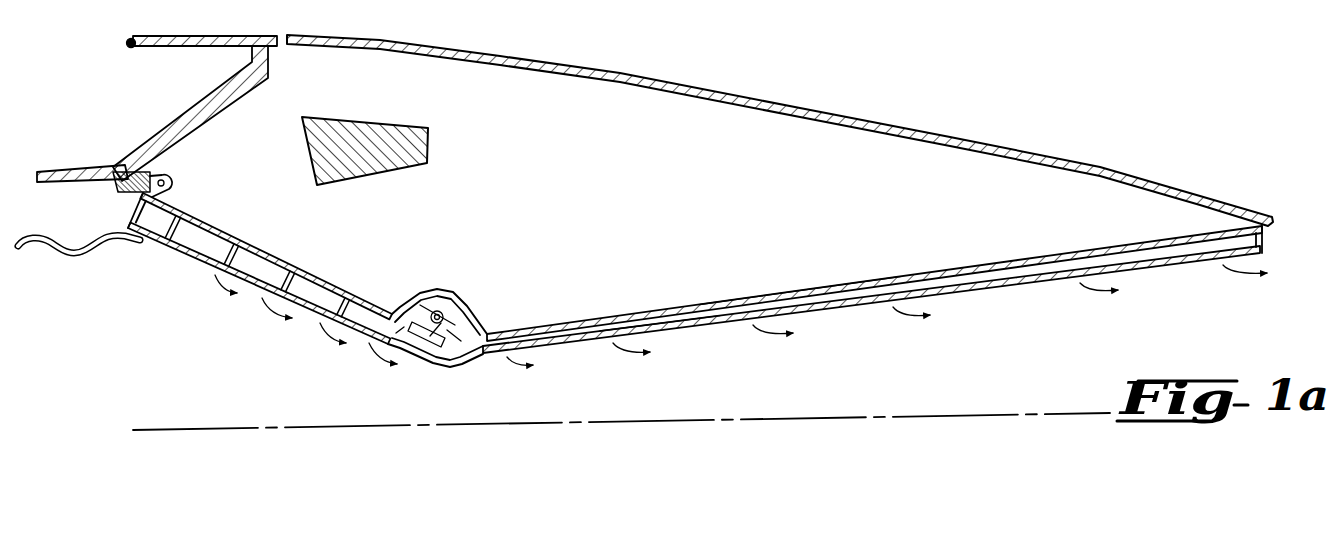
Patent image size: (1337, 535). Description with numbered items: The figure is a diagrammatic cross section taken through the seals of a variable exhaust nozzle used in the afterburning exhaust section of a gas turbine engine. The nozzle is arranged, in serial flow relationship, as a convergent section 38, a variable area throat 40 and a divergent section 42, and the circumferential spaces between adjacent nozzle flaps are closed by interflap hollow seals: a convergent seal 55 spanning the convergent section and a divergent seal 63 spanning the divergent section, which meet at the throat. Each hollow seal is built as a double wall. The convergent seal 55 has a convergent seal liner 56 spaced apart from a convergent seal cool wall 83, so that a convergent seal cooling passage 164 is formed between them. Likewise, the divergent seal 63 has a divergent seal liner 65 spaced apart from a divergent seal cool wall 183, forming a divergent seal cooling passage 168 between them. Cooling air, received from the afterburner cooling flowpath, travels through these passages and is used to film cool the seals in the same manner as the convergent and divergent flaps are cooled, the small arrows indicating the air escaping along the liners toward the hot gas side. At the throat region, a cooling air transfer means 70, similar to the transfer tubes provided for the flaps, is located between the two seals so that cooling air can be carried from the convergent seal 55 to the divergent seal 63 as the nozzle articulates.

The convergent section 38 is at (230, 373).
The variable area throat 40 is at (453, 407).
The divergent section 42 is at (872, 303).
The interflap convergent hollow seal 55 is at (325, 270).
The convergent seal liner 56 is at (271, 268).
The interflap divergent hollow seal 63 is at (977, 263).
The divergent seal liner 65 is at (1010, 288).
The cooling air transfer means 70 is at (467, 303).
The convergent seal cool wall 83 is at (352, 288).
The convergent seal cooling passage 164 is at (279, 254).
The divergent seal cooling passage 168 is at (658, 320).
The divergent seal cool wall 183 is at (788, 288).